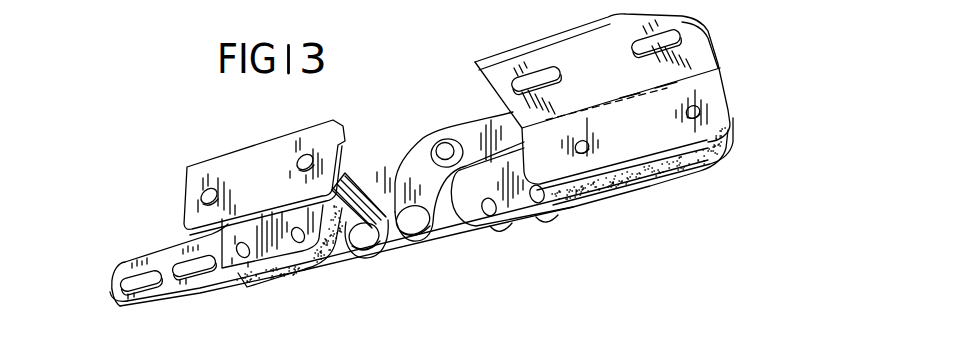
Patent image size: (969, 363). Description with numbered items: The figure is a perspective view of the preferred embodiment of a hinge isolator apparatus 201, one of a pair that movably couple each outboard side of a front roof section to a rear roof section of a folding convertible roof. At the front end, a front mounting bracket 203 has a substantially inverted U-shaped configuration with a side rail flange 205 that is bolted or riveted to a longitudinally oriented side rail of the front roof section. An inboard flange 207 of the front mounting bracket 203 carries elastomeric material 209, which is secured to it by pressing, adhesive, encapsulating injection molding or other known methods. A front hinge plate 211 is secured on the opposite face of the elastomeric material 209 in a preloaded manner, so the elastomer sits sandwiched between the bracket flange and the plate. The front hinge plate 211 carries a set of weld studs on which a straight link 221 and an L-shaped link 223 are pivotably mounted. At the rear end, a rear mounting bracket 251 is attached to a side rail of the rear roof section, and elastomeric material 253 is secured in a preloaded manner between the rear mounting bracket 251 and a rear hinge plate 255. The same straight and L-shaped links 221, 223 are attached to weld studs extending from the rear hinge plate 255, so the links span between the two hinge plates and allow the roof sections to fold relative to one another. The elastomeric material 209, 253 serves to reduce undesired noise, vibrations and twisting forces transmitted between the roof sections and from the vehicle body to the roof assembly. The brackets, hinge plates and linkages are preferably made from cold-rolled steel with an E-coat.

The hinge isolator apparatus 201 is at (104, 243).
The front mounting bracket 203 is at (262, 162).
The side rail flange 205 is at (192, 192).
The inboard flange 207 is at (252, 257).
The elastomeric material 209 is at (304, 266).
The front hinge plate 211 is at (345, 255).
The straight link 221 is at (358, 168).
The L-shaped link 223 is at (421, 165).
The rear mounting bracket 251 is at (712, 60).
The elastomeric material 253 is at (722, 147).
The rear hinge plate 255 is at (524, 218).